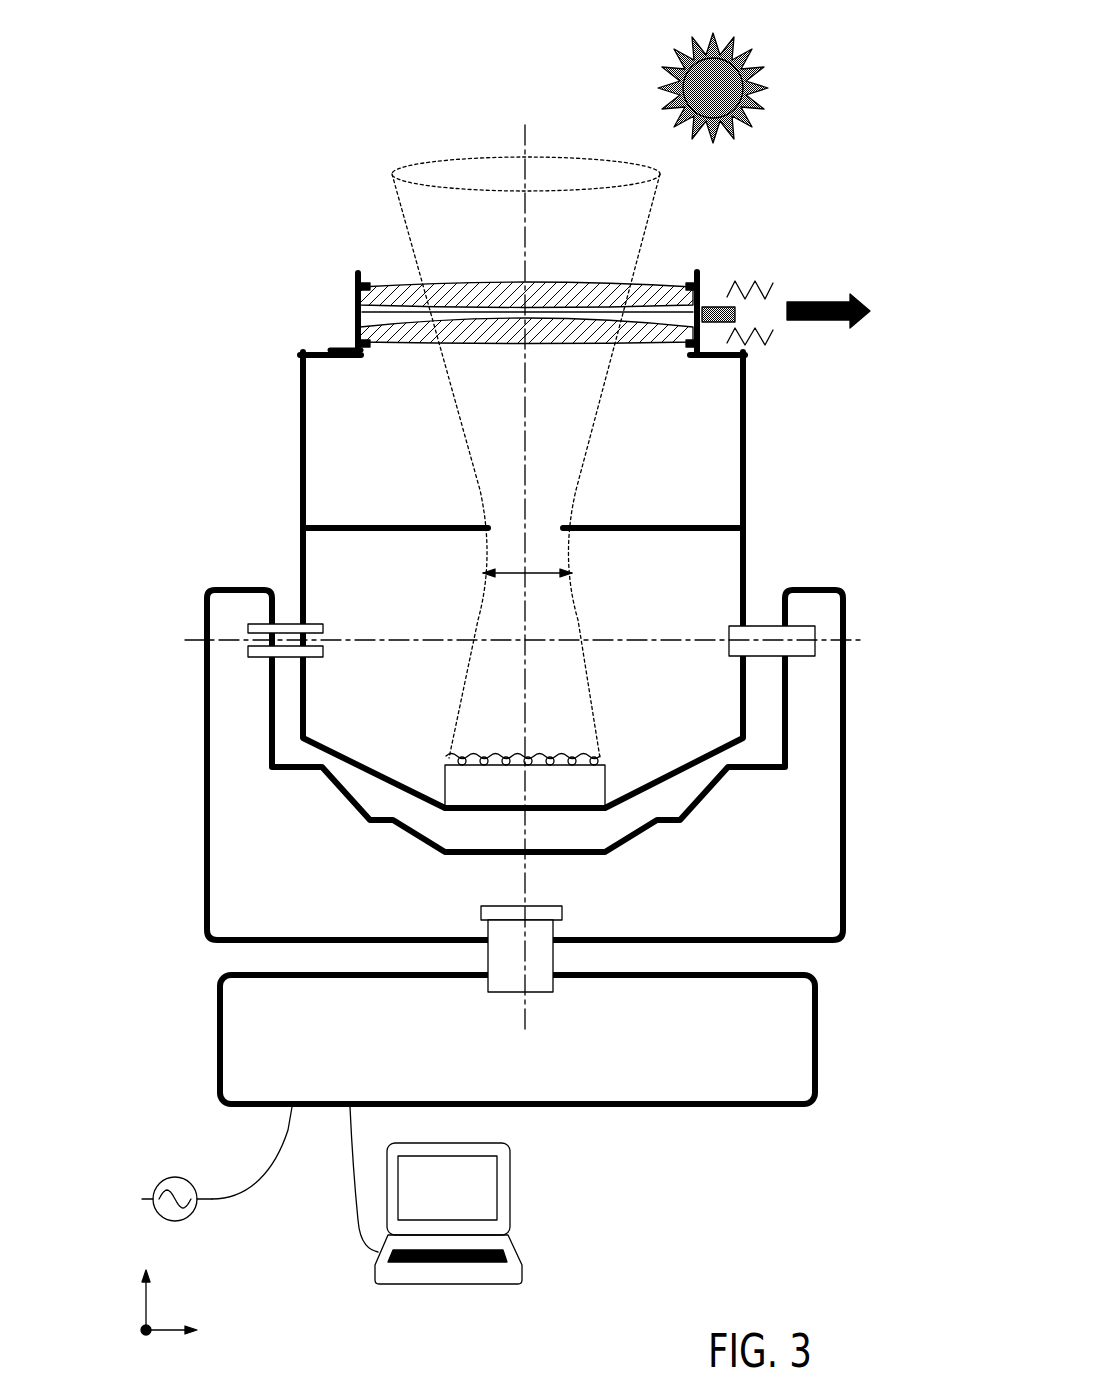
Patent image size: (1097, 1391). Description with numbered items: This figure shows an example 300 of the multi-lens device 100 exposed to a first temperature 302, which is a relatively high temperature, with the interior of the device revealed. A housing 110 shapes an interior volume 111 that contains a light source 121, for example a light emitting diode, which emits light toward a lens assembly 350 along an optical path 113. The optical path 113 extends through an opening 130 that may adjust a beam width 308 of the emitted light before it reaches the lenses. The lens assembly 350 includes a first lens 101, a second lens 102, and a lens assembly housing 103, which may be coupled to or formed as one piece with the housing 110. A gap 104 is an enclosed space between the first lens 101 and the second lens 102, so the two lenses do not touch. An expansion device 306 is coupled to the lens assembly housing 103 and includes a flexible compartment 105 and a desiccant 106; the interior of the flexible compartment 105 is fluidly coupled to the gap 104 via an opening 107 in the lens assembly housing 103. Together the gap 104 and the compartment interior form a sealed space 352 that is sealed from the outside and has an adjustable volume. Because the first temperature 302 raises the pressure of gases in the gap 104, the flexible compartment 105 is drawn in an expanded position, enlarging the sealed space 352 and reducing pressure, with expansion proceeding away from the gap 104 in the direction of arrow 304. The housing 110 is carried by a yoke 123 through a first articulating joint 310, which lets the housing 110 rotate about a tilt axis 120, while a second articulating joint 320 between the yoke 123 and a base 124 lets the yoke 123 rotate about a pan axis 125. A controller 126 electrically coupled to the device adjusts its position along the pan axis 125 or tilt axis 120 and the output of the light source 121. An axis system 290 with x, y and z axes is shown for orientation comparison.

The example 300 is at (287, 45).
The first temperature 302 is at (745, 40).
The multi-lens device 100 is at (698, 215).
The optical path 113 is at (527, 250).
The lens assembly 350 is at (505, 265).
The sealed space 352 is at (612, 296).
The first lens 101 is at (380, 283).
The lens assembly housing 103 is at (353, 307).
The second lens 102 is at (353, 332).
The gap 104 is at (660, 303).
The opening 107 is at (702, 304).
The flexible compartment 105 is at (773, 288).
The desiccant 106 is at (723, 317).
The expansion device 306 is at (773, 282).
The arrow 304 is at (837, 322).
The housing 110 is at (300, 390).
The interior volume 111 is at (713, 443).
The opening 130 is at (547, 526).
The beam width 308 is at (548, 572).
The first articulating joint 310 is at (768, 624).
The tilt axis 120 is at (200, 633).
The light source 121 is at (478, 787).
The yoke 123 is at (248, 860).
The second articulating joint 320 is at (490, 957).
The pan axis 125 is at (523, 957).
The base 124 is at (715, 1027).
The controller 126 is at (442, 1193).
The axis system 290 is at (182, 1273).